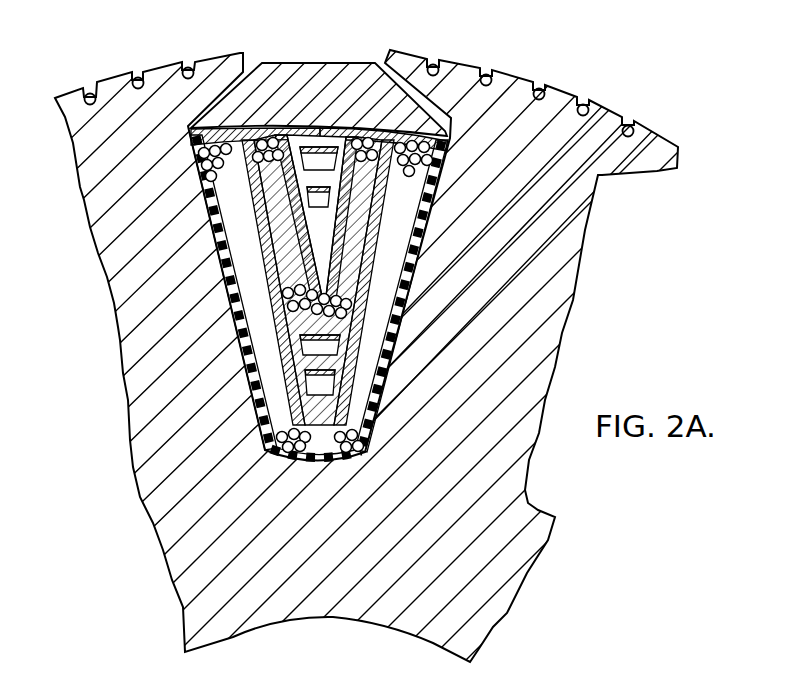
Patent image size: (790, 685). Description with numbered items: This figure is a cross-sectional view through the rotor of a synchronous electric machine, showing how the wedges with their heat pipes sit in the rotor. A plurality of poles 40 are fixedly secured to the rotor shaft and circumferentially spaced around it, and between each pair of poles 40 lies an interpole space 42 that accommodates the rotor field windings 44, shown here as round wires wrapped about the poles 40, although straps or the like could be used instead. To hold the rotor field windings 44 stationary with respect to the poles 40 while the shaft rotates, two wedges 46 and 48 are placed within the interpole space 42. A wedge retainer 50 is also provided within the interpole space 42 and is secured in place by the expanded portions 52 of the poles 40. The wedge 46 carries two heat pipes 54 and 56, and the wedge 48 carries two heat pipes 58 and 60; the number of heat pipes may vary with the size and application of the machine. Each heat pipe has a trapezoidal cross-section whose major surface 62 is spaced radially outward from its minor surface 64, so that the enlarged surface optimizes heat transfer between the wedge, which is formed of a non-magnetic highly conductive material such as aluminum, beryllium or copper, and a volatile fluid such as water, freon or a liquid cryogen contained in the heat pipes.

The pole 40 is at (125, 337).
The interpole space 42 is at (387, 368).
The rotor field winding 44 is at (240, 268).
The wedge 46 is at (318, 133).
The wedge 48 is at (312, 400).
The wedge retainer 50 is at (347, 63).
The expanded portion 52 is at (228, 63).
The heat pipe 54 is at (298, 163).
The heat pipe 56 is at (295, 193).
The heat pipe 58 is at (295, 335).
The heat pipe 60 is at (298, 368).
The major surface 62 is at (312, 130).
The minor surface 64 is at (337, 137).